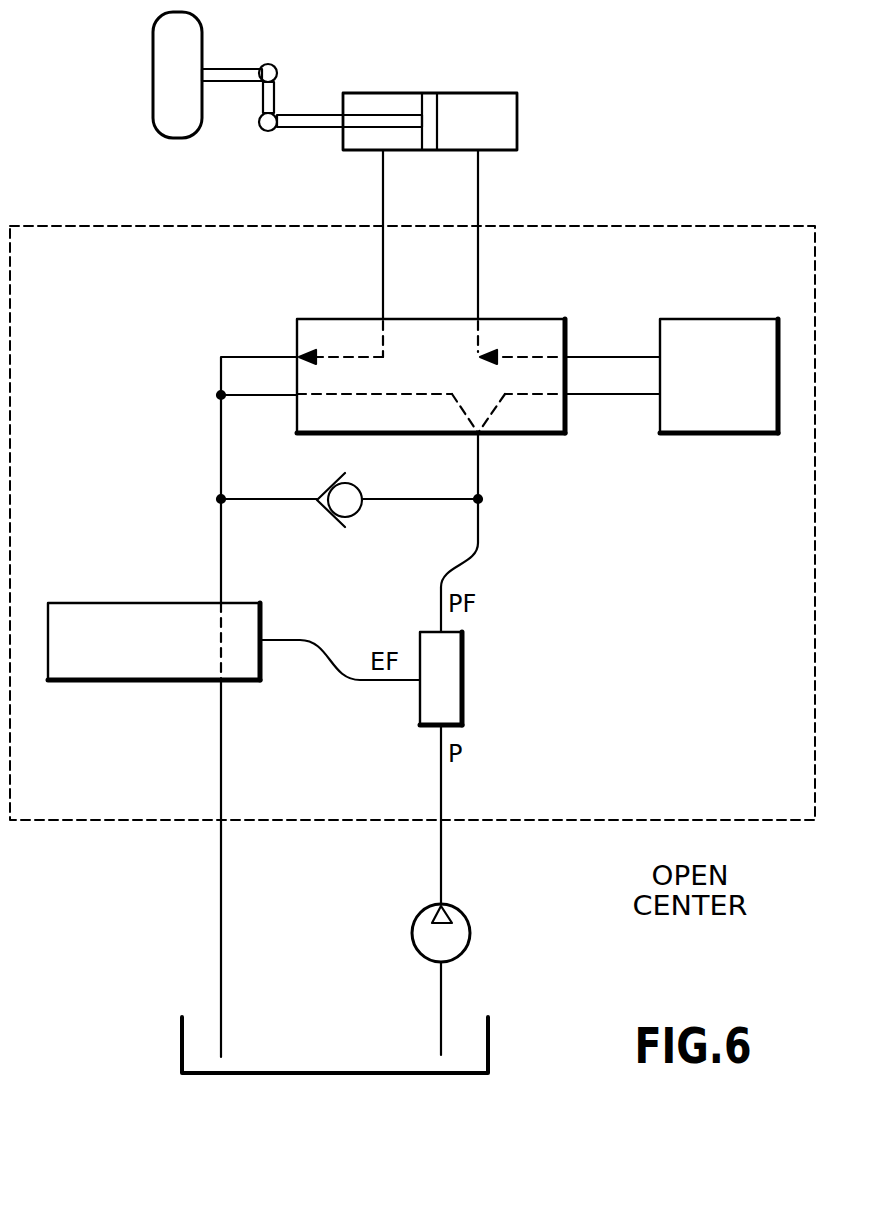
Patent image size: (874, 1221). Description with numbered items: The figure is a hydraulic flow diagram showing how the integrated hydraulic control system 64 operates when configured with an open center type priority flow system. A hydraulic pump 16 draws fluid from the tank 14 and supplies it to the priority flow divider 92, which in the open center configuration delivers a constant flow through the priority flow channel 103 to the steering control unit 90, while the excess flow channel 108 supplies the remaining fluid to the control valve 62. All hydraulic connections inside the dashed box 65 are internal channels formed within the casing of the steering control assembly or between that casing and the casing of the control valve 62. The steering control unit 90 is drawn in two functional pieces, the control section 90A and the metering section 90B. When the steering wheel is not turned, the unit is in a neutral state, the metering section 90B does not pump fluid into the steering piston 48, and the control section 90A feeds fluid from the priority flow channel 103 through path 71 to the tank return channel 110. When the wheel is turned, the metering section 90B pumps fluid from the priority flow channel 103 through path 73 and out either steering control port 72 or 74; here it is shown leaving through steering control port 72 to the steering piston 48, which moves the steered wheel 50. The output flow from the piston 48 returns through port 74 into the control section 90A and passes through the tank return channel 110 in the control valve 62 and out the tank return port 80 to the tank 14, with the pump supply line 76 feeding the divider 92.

The tank 14 is at (488, 1045).
The hydraulic pump 16 is at (470, 933).
The steering piston 48 is at (481, 92).
The steered wheel 50 is at (153, 77).
The control valve 62 is at (88, 603).
The integrated hydraulic control system 64 is at (412, 490).
The dashed box 65 is at (767, 225).
The path 71 is at (452, 394).
The steering control port 72 is at (478, 285).
The path 73 is at (613, 356).
The steering control port 74 is at (383, 285).
The pump supply line 76 is at (441, 783).
The tank return port 80 is at (221, 783).
The steering control unit 90 is at (537, 358).
The control section 90A is at (431, 343).
The metering section 90B is at (748, 318).
The priority flow divider 92 is at (462, 678).
The priority flow channel 103 is at (478, 528).
The excess flow channel 108 is at (305, 640).
The tank return channel 110 is at (221, 377).